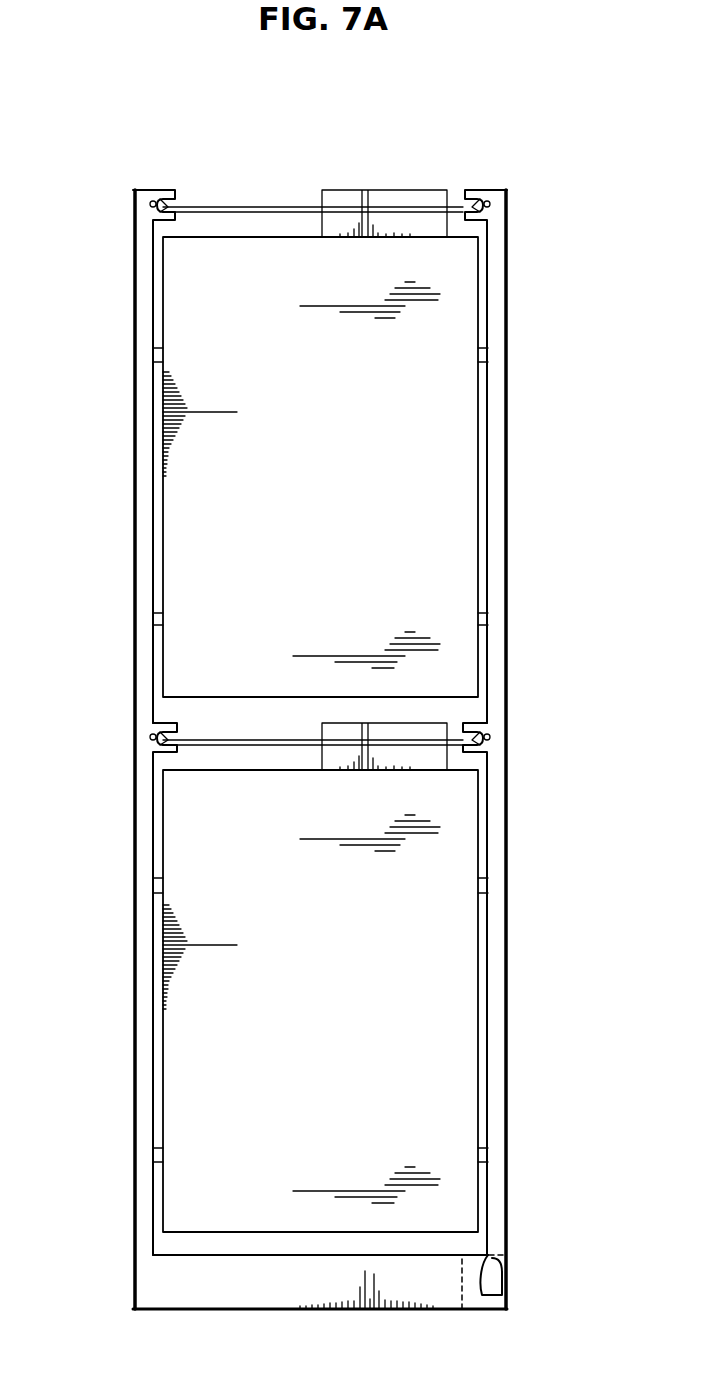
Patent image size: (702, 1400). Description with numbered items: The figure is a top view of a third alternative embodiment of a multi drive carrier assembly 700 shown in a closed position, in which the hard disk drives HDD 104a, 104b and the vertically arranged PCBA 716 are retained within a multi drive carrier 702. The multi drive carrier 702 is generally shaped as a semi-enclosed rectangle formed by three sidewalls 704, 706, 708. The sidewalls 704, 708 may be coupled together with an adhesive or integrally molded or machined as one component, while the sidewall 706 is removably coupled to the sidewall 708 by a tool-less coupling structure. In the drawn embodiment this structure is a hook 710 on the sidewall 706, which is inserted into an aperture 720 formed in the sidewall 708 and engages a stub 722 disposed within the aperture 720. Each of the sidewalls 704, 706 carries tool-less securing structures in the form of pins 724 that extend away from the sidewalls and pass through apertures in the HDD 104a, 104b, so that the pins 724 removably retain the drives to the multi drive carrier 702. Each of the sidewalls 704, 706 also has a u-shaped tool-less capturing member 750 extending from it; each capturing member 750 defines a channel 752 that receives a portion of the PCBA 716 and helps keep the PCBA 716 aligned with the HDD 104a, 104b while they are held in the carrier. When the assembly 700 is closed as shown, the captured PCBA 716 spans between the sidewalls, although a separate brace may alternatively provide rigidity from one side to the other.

The multi drive carrier assembly 700 is at (225, 148).
The multi drive carrier 702 is at (122, 222).
The sidewall 704 is at (134, 404).
The sidewall 706 is at (508, 370).
The sidewall 708 is at (338, 1310).
The hook 710 is at (496, 1248).
The PCBA 716 is at (453, 184).
The aperture 720 is at (473, 1295).
The stub 722 is at (508, 1283).
The pins 724 is at (153, 350).
The u-shaped tool-less capturing member 750 is at (148, 184).
The channel 752 is at (187, 198).
The HDD 104a is at (350, 1057).
The HDD 104b is at (350, 522).